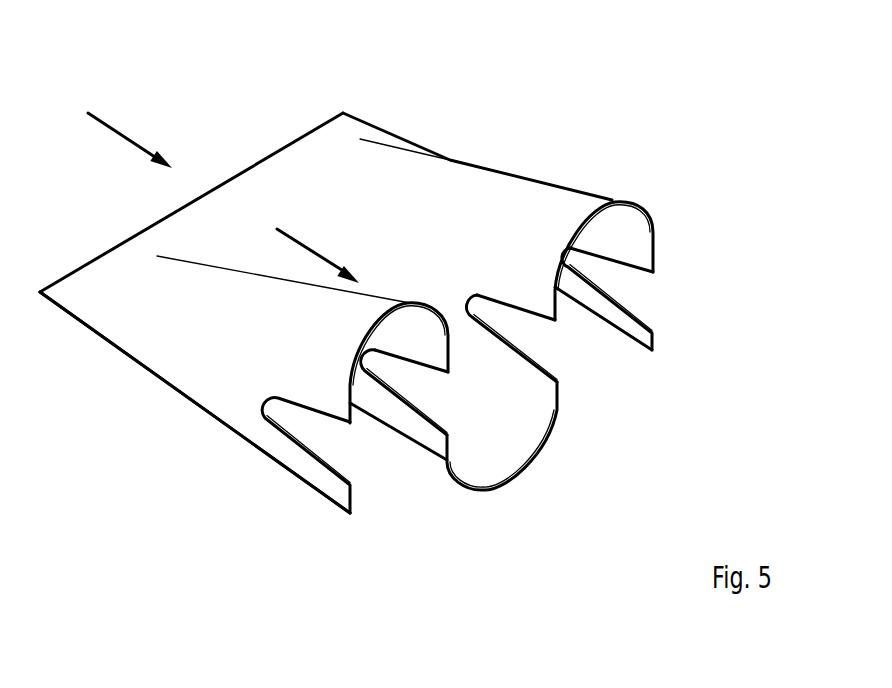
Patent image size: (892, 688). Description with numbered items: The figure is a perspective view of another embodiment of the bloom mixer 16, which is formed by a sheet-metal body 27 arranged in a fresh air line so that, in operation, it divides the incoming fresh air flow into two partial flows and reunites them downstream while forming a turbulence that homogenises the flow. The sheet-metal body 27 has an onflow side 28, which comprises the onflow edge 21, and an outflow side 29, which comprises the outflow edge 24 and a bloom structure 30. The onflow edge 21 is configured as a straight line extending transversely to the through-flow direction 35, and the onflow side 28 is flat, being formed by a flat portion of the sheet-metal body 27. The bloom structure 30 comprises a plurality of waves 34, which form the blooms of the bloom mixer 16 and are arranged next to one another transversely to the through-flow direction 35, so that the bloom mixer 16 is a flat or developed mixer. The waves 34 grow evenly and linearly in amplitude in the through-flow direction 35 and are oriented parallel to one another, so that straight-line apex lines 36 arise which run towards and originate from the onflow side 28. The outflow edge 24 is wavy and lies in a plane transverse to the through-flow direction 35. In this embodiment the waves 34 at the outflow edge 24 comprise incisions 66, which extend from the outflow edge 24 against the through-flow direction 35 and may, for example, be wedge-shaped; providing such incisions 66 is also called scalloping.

The bloom mixer 16 is at (513, 93).
The onflow edge 21 is at (300, 135).
The outflow edge 24 is at (543, 450).
The sheet-metal body 27 is at (410, 130).
The onflow side 28 is at (269, 195).
The outflow side 29 is at (242, 412).
The bloom structure 30 is at (647, 212).
The waves 34 is at (608, 197).
The through-flow direction 35 is at (127, 133).
The apex lines 36 is at (565, 187).
The incisions 66 is at (566, 258).